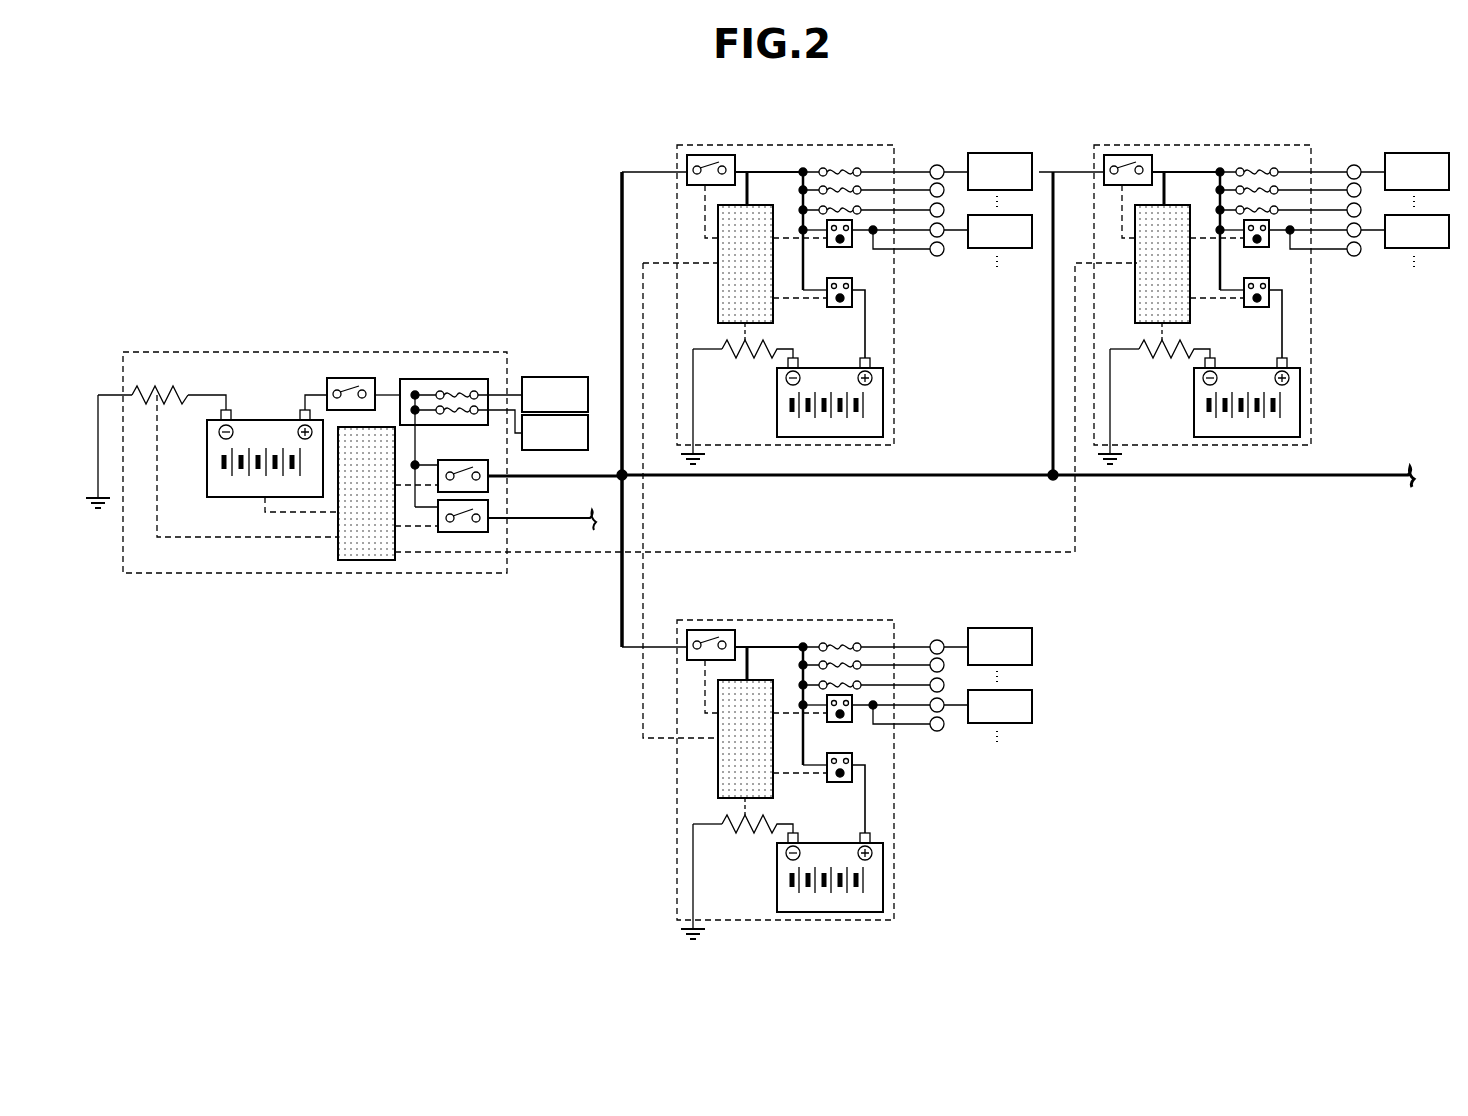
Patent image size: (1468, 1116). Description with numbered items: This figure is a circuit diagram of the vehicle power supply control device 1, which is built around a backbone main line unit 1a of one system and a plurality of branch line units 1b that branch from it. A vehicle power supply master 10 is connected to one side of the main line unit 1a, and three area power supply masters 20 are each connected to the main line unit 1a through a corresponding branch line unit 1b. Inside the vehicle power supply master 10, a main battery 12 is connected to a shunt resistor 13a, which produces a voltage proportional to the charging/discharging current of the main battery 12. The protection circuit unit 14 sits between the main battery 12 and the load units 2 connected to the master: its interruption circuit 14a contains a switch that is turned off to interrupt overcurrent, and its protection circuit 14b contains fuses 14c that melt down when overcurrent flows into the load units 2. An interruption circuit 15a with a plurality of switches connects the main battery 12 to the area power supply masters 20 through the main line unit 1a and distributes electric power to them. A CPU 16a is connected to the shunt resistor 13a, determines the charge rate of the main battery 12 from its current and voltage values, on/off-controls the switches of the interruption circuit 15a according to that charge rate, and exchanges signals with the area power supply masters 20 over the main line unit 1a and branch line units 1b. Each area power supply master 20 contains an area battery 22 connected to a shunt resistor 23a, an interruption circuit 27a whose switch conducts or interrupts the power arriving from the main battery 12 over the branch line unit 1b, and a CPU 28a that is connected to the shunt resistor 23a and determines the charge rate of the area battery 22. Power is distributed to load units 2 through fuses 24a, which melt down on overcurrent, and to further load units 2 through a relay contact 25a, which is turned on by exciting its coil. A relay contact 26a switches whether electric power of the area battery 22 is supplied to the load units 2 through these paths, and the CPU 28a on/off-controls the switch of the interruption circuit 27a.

The vehicle power supply control device 1 is at (573, 132).
The main line unit 1a is at (907, 474).
The branch line unit 1b is at (624, 498).
The load unit 2 is at (588, 395).
The vehicle power supply master 10 is at (483, 352).
The main battery 12 is at (262, 420).
The shunt resistor 13a is at (174, 382).
The protection circuit unit 14 is at (334, 341).
The interruption circuit 14a is at (353, 378).
The protection circuit 14b is at (410, 379).
The fuse 14c is at (472, 390).
The interruption circuit 15a is at (488, 470).
The central processing unit (CPU) 16a is at (366, 560).
The area power supply master 20 is at (868, 140).
The area battery 22 is at (883, 396).
The shunt resistor 23a is at (767, 345).
The fuse 24a is at (842, 198).
The relay contact 25a is at (843, 247).
The relay contact 26a is at (855, 282).
The interruption circuit 27a is at (706, 155).
The central processing unit (CPU) 28a is at (756, 205).